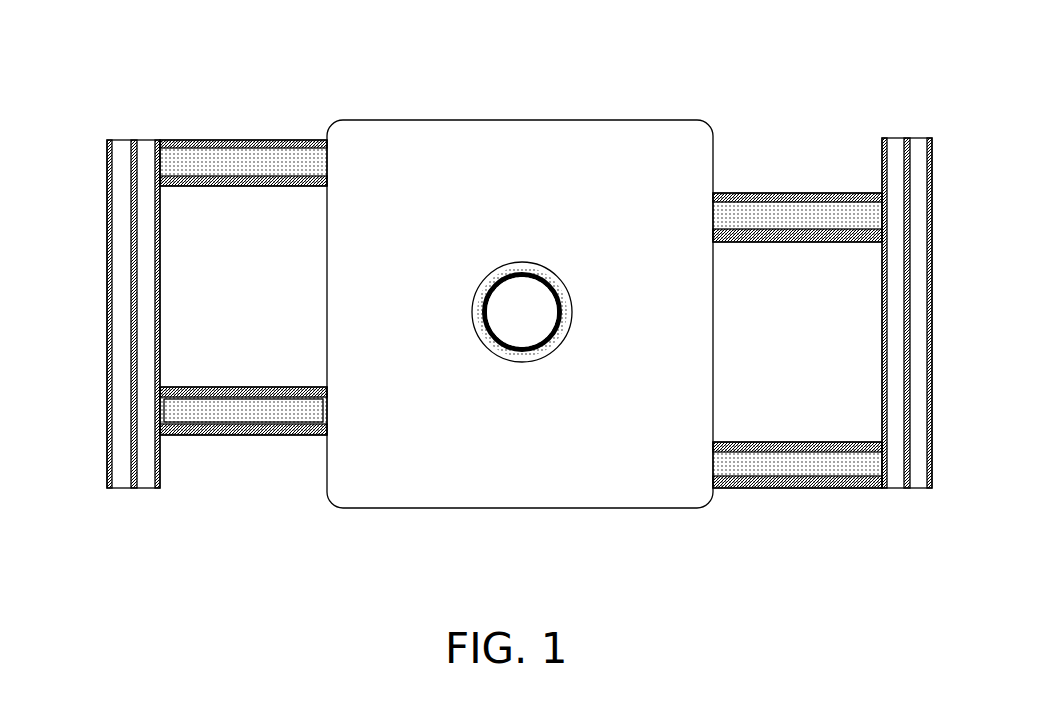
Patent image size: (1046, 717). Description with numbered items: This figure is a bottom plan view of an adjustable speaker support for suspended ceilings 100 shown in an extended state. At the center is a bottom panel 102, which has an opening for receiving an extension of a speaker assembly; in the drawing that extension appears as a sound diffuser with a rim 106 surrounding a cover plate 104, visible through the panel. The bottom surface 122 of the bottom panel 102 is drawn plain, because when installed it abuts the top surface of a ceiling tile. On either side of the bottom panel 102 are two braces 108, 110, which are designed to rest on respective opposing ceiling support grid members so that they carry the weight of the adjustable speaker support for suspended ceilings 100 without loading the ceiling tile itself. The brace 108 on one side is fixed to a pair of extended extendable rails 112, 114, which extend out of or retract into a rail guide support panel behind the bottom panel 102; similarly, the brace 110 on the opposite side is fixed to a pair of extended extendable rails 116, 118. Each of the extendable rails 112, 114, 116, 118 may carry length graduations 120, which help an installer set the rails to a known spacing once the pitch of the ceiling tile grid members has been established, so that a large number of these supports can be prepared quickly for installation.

The adjustable speaker support for suspended ceilings 100 is at (182, 35).
The bottom panel 102 is at (495, 143).
The cover plate 104 is at (530, 295).
The rim 106 is at (478, 290).
The brace 108 is at (120, 140).
The brace 110 is at (915, 138).
The extendable rail 112 is at (225, 140).
The extendable rail 114 is at (203, 388).
The extendable rail 116 is at (826, 193).
The extendable rail 118 is at (835, 442).
The length graduations 120 is at (258, 410).
The bottom surface 122 is at (615, 140).